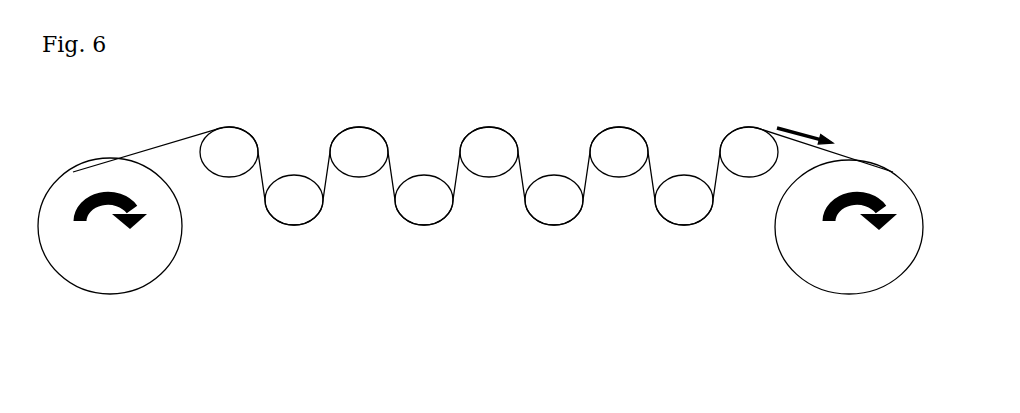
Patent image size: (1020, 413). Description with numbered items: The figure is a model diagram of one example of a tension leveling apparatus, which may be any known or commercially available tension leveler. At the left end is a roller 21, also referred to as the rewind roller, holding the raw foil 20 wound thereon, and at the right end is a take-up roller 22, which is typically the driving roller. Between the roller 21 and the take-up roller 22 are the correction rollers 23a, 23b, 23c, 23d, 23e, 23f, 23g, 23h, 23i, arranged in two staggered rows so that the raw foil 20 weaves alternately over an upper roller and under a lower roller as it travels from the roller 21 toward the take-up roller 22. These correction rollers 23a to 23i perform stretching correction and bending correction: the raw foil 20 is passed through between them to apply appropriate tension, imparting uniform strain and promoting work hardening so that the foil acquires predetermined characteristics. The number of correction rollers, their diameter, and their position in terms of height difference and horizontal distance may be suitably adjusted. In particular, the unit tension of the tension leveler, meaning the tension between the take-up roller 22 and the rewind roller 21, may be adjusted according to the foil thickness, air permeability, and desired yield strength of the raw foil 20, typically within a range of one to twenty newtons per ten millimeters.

The raw foil 20 is at (163, 138).
The roller 21 is at (125, 258).
The take-up roller 22 is at (833, 257).
The correction roller 23a is at (233, 145).
The correction roller 23b is at (300, 208).
The correction roller 23c is at (363, 145).
The correction roller 23d is at (430, 208).
The correction roller 23e is at (493, 145).
The correction roller 23f is at (560, 208).
The correction roller 23g is at (623, 145).
The correction roller 23h is at (690, 208).
The correction roller 23i is at (753, 145).